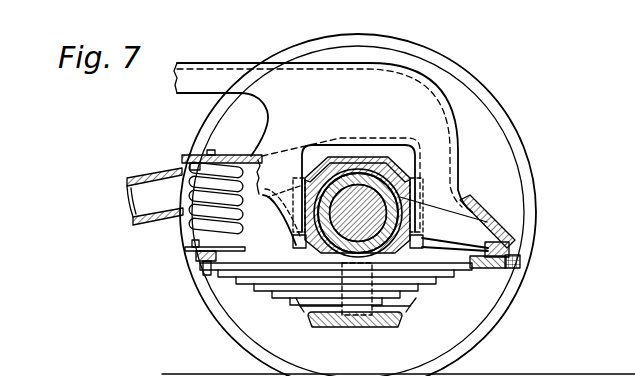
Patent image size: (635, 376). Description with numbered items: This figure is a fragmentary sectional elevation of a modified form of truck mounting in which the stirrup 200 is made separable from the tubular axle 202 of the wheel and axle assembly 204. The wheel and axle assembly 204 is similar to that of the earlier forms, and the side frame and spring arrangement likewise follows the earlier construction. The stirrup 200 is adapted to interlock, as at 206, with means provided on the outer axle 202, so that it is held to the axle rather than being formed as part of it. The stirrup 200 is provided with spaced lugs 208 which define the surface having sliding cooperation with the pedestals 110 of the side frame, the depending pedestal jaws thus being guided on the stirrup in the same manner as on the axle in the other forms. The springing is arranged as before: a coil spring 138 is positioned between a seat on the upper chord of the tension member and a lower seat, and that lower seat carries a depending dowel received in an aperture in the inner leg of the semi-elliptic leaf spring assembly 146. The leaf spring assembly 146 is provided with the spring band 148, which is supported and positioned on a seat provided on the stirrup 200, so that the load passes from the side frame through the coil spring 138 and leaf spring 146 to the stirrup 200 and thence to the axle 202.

The pedestal jaws 110 is at (433, 155).
The wheel and axle assembly 204 is at (452, 82).
The tubular axle 202 is at (400, 212).
The interlock 206 is at (358, 176).
The spaced lugs 208 is at (474, 219).
The coil spring 138 is at (205, 214).
The semi-elliptic leaf spring assembly 146 is at (270, 273).
The spring band 148 is at (400, 306).
The stirrup 200 is at (336, 320).